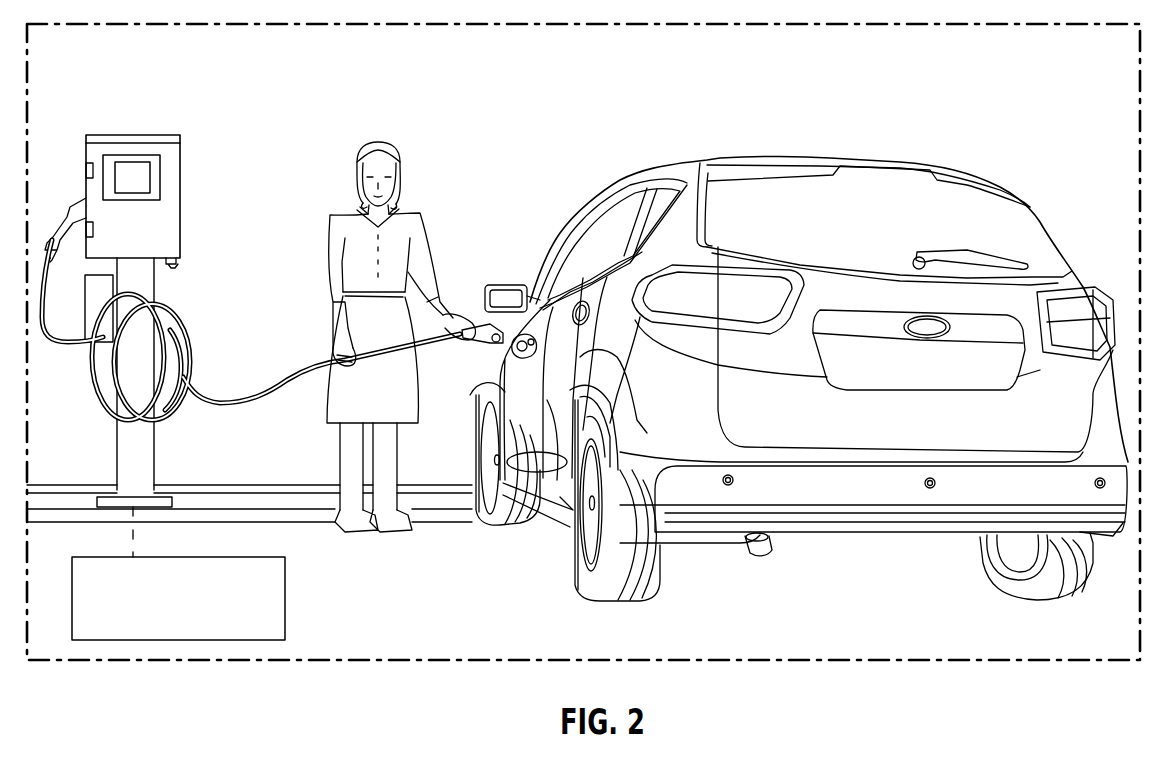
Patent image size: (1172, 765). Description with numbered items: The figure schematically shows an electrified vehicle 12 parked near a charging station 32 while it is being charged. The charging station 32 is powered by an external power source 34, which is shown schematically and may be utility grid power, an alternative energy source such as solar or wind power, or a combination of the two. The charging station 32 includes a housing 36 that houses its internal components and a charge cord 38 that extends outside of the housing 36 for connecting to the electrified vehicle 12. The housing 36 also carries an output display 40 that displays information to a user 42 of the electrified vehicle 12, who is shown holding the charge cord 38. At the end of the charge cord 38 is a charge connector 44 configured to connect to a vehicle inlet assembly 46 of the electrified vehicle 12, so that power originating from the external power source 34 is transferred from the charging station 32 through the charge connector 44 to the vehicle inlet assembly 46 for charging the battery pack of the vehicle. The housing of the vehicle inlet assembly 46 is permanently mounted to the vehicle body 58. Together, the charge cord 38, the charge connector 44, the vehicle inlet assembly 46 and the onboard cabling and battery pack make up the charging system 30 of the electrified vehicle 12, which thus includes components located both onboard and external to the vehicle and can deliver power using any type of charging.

The electrified vehicle 12 is at (786, 322).
The charging system 30 is at (478, 275).
The charging station 32 is at (144, 307).
The external power source 34 is at (287, 596).
The housing 36 is at (138, 237).
The charge cord 38 is at (296, 356).
The output display 40 is at (135, 177).
The user 42 is at (358, 238).
The charge connector 44 is at (495, 342).
The vehicle inlet assembly 46 is at (528, 355).
The vehicle body 58 is at (545, 512).